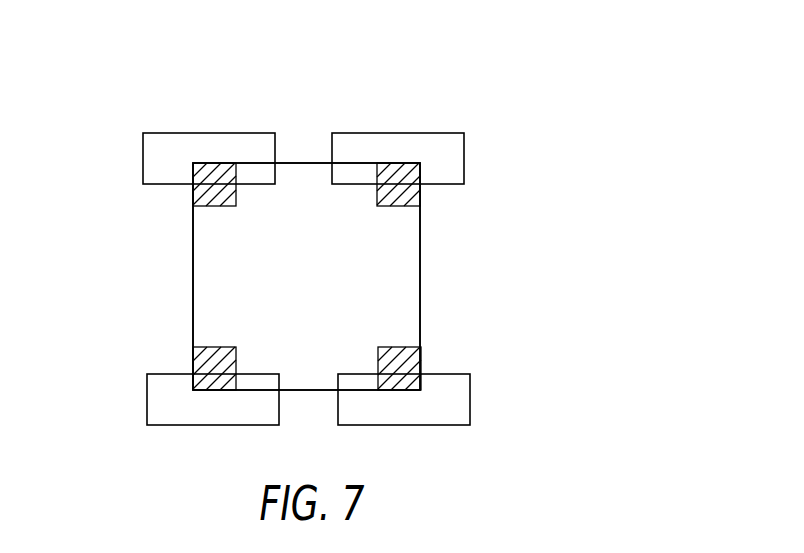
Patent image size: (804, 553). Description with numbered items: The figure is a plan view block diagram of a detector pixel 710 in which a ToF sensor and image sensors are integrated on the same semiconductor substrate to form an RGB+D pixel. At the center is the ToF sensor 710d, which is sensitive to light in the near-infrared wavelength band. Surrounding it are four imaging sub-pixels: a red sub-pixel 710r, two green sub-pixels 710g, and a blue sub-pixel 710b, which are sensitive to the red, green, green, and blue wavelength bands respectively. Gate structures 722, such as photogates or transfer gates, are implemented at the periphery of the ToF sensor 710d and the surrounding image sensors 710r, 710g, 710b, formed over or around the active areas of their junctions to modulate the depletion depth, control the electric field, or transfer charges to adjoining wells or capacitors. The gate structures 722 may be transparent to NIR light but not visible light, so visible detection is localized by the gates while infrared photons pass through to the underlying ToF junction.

The detector pixel 710 is at (433, 130).
The gate structures 722 is at (240, 156).
The ToF sensor 710d is at (355, 265).
The green sub-pixel 710g is at (218, 203).
The red sub-pixel 710r is at (413, 200).
The blue sub-pixel 710b is at (215, 352).